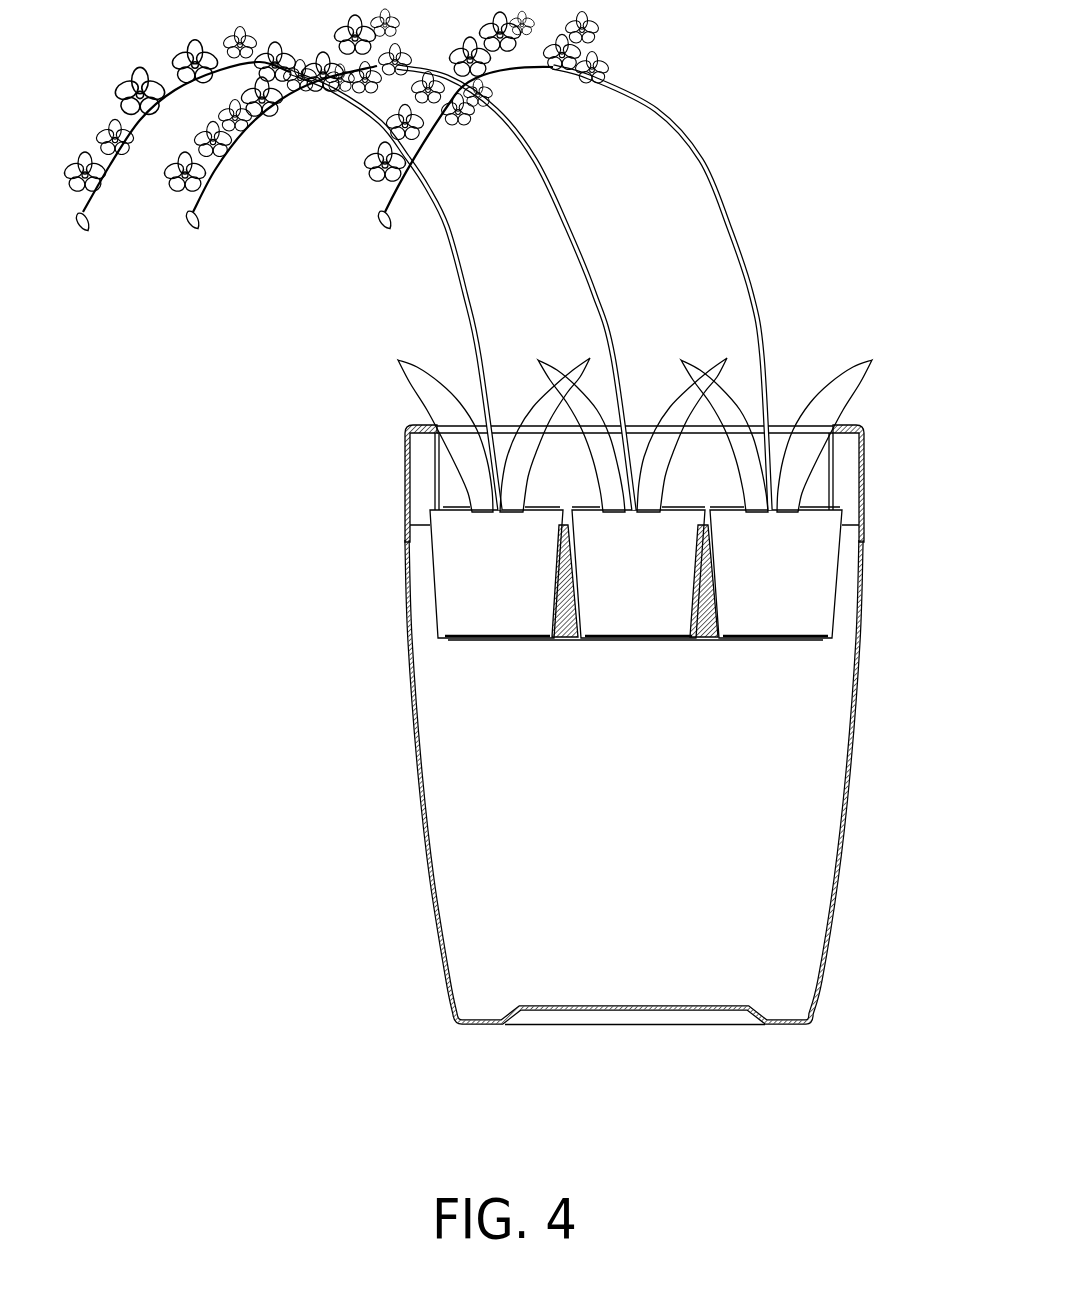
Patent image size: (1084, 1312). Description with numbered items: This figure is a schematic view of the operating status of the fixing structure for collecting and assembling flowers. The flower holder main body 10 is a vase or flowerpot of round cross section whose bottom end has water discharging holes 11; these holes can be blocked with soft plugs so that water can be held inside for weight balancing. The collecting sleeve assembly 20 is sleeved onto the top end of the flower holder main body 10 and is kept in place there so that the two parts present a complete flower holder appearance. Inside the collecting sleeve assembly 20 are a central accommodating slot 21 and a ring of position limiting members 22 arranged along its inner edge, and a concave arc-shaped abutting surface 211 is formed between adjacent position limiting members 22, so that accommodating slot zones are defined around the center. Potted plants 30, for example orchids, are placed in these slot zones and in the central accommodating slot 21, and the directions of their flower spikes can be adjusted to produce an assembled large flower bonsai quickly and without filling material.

The flower holder main body 10 is at (852, 872).
The water discharging holes 11 is at (575, 1007).
The collecting sleeve assembly 20 is at (872, 478).
The central accommodating slot 21 is at (572, 592).
The concave arc-shaped abutting surface 211 is at (712, 580).
The position limiting members 22 is at (688, 437).
The potted plants 30 is at (815, 571).